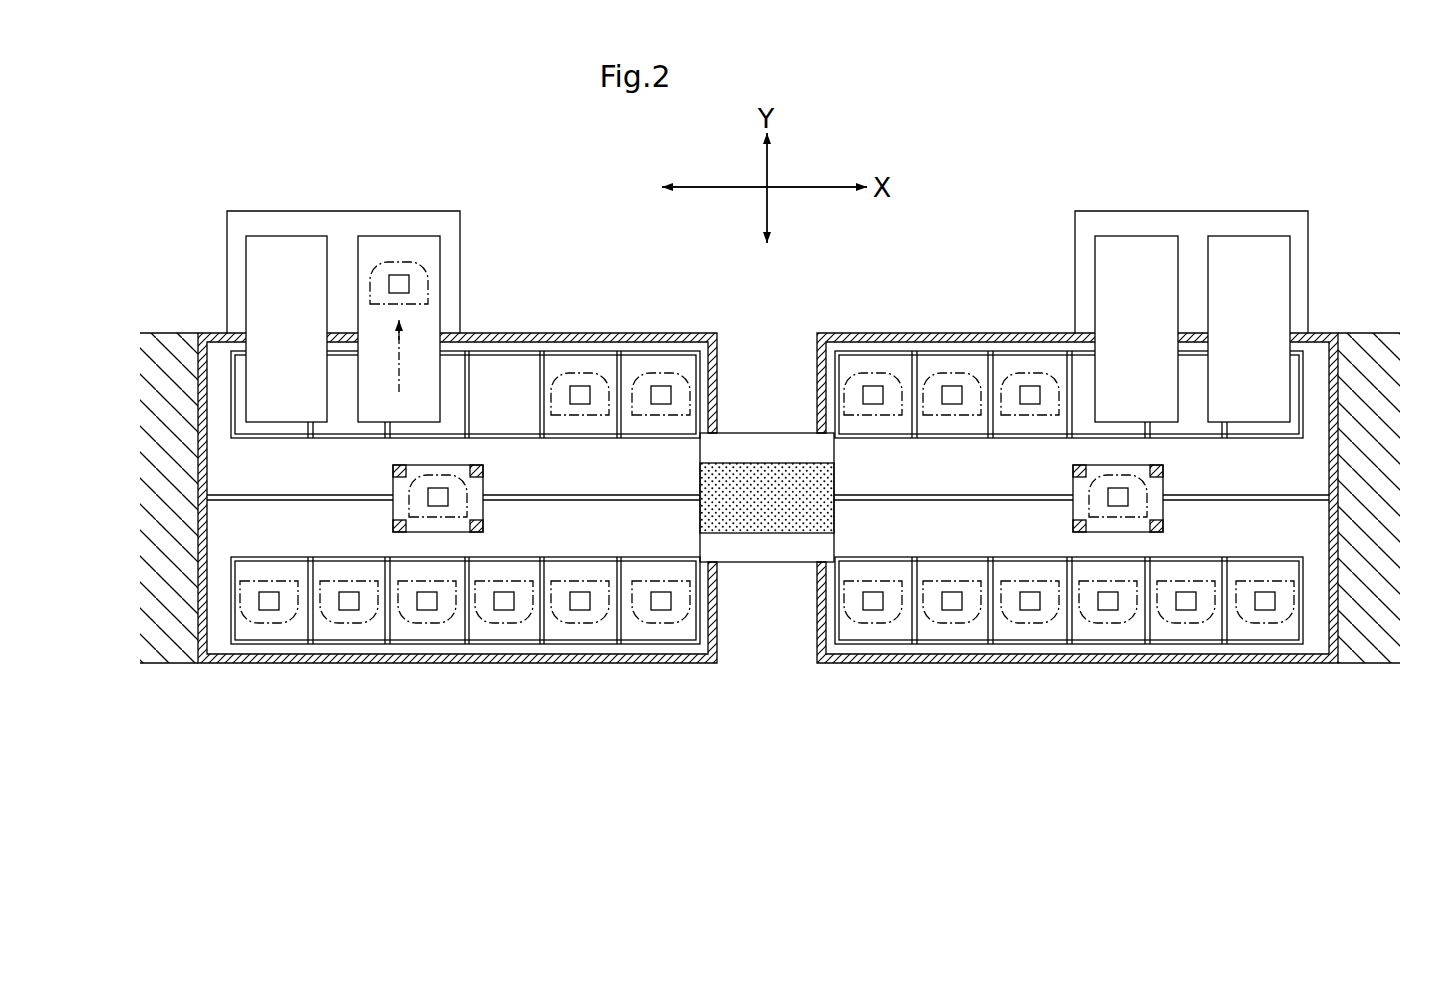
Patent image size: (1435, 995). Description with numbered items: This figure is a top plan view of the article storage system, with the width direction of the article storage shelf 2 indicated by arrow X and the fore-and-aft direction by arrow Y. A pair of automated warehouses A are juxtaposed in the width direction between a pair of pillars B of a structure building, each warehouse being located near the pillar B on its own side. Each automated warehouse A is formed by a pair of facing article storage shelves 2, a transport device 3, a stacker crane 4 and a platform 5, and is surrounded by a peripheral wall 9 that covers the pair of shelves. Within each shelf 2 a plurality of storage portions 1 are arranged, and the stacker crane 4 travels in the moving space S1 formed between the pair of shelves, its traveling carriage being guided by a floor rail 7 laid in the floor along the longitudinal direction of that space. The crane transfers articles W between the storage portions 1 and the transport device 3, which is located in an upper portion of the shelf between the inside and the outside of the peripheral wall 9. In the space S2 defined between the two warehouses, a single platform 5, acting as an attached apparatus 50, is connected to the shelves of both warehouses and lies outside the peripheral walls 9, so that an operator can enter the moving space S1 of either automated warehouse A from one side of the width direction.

The storage portion 1 is at (287, 632).
The article storage shelf 2 is at (596, 441).
The transport device 3 is at (358, 253).
The stacker crane 4 is at (486, 514).
The platform 5 is at (760, 565).
The attached apparatus 50 is at (767, 533).
The floor rail 7 is at (331, 494).
The peripheral wall 9 is at (441, 664).
The automated warehouse A is at (543, 300).
The pillar B is at (173, 333).
The wafer W is at (510, 632).
The moving space S1 is at (637, 484).
The second space S2 is at (751, 414).